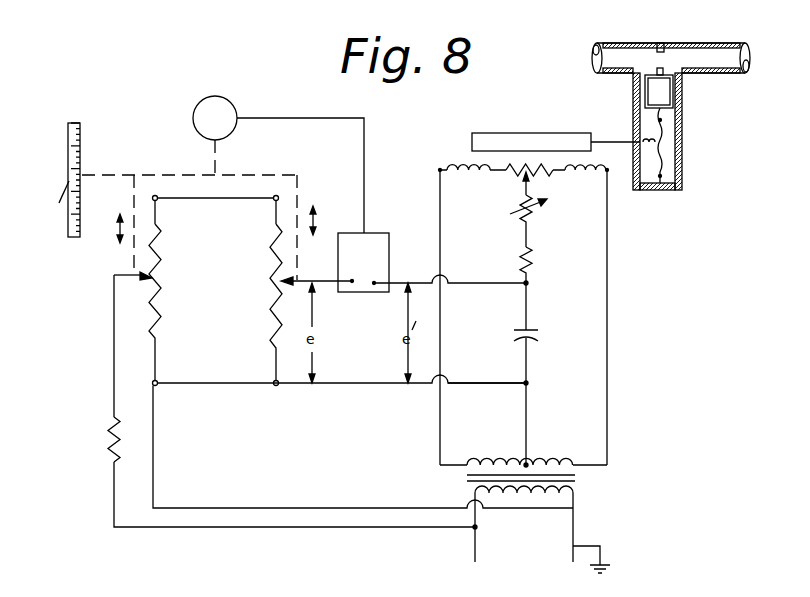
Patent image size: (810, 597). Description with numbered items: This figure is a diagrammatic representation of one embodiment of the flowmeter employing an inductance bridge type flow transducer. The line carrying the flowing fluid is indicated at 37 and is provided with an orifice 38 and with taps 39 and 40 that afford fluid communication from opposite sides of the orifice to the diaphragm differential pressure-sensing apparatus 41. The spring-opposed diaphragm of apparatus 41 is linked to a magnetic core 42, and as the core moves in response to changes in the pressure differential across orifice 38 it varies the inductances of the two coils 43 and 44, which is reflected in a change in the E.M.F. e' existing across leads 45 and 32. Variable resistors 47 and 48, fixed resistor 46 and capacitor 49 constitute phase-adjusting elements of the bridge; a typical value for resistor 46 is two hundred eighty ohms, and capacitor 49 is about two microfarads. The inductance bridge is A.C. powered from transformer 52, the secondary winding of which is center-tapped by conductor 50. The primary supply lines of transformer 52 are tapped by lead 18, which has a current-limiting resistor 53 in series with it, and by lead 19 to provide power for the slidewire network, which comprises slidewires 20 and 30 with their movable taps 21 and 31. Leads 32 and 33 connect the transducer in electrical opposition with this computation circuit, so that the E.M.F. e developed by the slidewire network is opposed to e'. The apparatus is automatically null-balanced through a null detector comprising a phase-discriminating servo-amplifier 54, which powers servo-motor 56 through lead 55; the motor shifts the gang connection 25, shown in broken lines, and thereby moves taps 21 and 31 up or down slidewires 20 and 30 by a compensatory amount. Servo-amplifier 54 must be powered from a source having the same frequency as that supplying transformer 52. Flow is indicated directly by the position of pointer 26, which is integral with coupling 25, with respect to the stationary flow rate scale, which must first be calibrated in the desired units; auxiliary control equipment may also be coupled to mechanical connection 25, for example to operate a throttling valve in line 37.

The lead 18 is at (114, 350).
The lead 19 is at (251, 507).
The slidewire 20 is at (160, 326).
The movable tap 21 is at (139, 281).
The mechanical coupling 25 is at (230, 178).
The pointer 26 is at (84, 175).
The slidewire 30 is at (272, 295).
The movable tap 31 is at (286, 283).
The lead 32 is at (479, 388).
The lead 33 is at (334, 281).
The line 37 is at (620, 47).
The orifice 38 is at (677, 47).
The tap 39 is at (676, 96).
The tap 40 is at (645, 93).
The diaphragm differential pressure-sensing apparatus 41 is at (683, 153).
The magnetic core 42 is at (522, 133).
The coil 43 is at (476, 175).
The coil 44 is at (589, 177).
The lead 45 is at (470, 286).
The fixed resistor 46 is at (535, 264).
The variable resistor 47 is at (531, 178).
The variable resistor 48 is at (544, 221).
The capacitor 49 is at (545, 336).
The conductor 50 is at (531, 422).
The transformer 52 is at (588, 481).
The current-limiting resistor 53 is at (108, 454).
The servo-amplifier 54 is at (384, 232).
The lead 55 is at (367, 162).
The servo-motor 56 is at (238, 103).